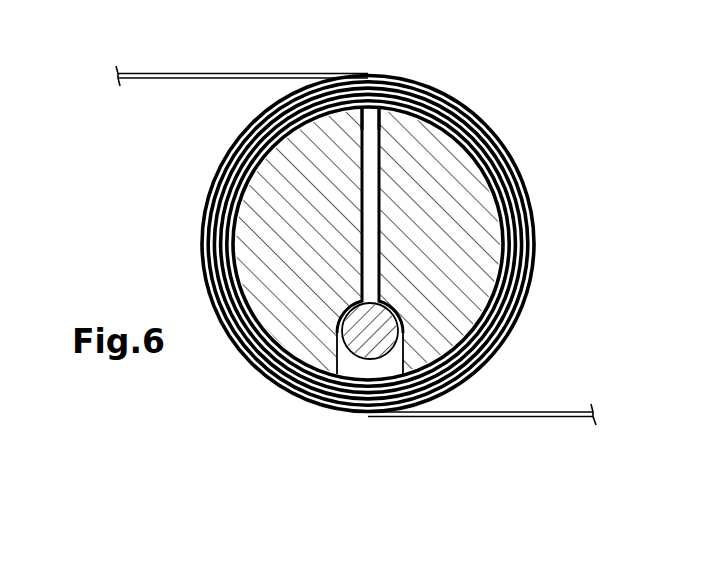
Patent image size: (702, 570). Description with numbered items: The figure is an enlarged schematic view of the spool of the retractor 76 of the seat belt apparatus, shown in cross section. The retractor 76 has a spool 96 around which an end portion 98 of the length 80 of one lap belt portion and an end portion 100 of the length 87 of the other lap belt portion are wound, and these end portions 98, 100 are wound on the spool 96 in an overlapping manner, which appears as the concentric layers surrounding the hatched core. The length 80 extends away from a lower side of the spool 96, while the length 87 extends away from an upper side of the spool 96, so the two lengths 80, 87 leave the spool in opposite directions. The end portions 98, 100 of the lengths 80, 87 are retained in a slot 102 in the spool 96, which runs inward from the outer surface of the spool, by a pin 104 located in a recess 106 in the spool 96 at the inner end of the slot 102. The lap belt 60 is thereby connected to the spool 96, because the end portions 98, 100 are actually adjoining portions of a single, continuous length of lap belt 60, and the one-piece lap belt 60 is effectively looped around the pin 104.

The lap belt 60 is at (250, 73).
The retractor 76 is at (177, 245).
The length of lap belt portion 80 is at (537, 411).
The length of lap belt portion 87 is at (193, 78).
The spool 96 is at (463, 188).
The end portion 98 is at (305, 92).
The end portion 100 is at (383, 112).
The slot 102 is at (378, 235).
The pin 104 is at (378, 329).
The recess 106 is at (341, 360).